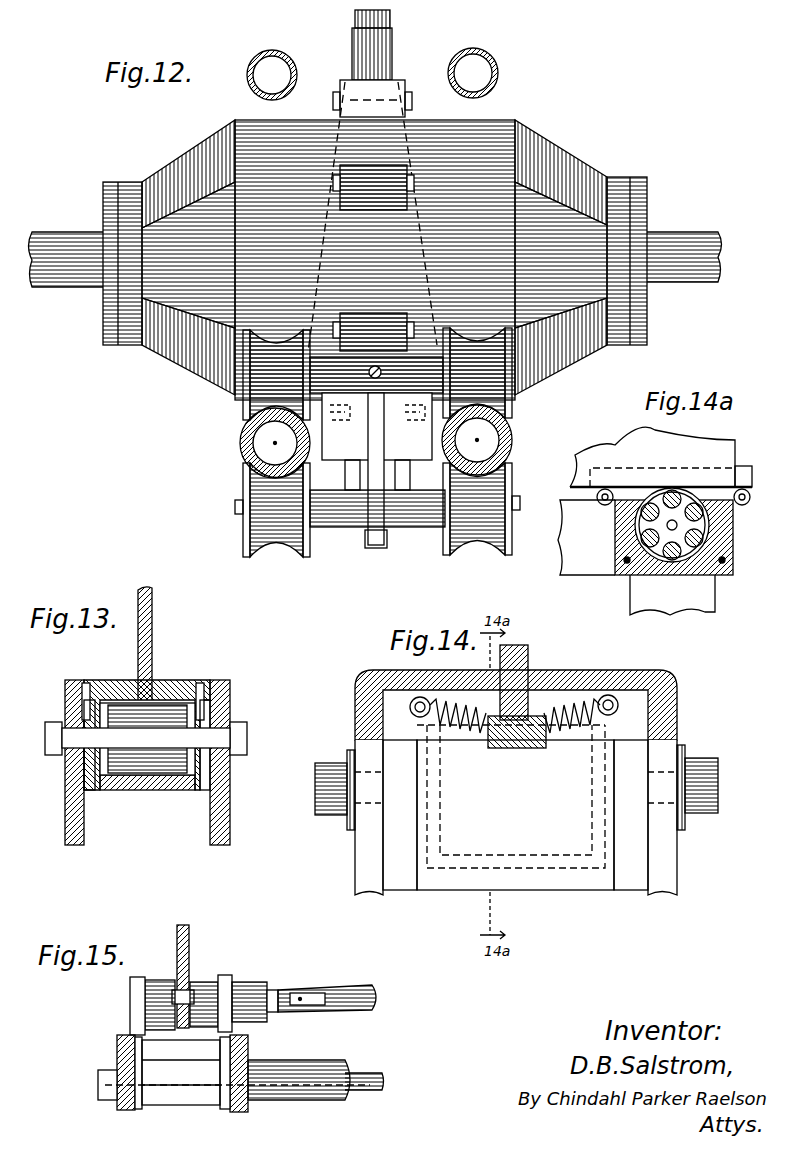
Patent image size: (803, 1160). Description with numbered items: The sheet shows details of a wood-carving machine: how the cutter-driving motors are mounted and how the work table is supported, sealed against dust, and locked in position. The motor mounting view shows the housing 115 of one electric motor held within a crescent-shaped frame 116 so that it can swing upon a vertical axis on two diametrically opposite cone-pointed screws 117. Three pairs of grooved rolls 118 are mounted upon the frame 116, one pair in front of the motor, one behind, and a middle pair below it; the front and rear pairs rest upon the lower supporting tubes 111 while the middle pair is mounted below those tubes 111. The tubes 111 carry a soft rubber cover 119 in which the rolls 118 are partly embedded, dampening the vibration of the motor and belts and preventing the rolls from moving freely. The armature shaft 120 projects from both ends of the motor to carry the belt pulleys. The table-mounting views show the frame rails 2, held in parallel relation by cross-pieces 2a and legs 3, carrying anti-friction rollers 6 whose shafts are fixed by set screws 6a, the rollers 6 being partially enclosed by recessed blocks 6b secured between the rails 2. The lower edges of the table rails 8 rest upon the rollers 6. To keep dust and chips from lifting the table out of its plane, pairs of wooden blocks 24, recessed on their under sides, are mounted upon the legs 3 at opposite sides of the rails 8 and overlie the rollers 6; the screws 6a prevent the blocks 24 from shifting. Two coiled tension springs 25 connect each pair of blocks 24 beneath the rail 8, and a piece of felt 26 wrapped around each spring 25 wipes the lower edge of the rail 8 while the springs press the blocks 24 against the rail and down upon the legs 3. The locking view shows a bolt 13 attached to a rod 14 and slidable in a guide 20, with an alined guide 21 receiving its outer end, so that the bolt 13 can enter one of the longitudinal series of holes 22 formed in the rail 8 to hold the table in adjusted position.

In FIG. 14A, the rails 2 is at (600, 572).
In FIG. 13, the rails 2 is at (92, 790).
In FIG. 14, the rails 2 is at (402, 878).
In FIG. 15, the rails 2 is at (128, 1110).
In FIG. 15, the cross-pieces 2a is at (325, 1068).
In FIG. 14A, the legs 3 is at (718, 600).
In FIG. 13, the legs 3 is at (66, 825).
In FIG. 14, the legs 3 is at (358, 893).
In FIG. 14A, the anti-friction rollers 6 is at (682, 560).
In FIG. 13, the anti-friction rollers 6 is at (140, 770).
In FIG. 14, the anti-friction rollers 6 is at (463, 872).
In FIG. 13, the set screws 6a is at (82, 690).
In FIG. 14A, the recessed blocks 6b is at (735, 555).
In FIG. 13, the recessed blocks 6b is at (172, 790).
In FIG. 14, the recessed blocks 6b is at (548, 875).
In FIG. 14A, the rails 8 is at (715, 445).
In FIG. 13, the rails 8 is at (152, 623).
In FIG. 14, the rails 8 is at (520, 650).
In FIG. 15, the rails 8 is at (189, 935).
In FIG. 15, the bolts 13 is at (173, 982).
In FIG. 15, the rod 14 is at (348, 985).
In FIG. 15, the guides 20 is at (255, 982).
In FIG. 15, the guides 21 is at (138, 978).
In FIG. 15, the holes 22 is at (192, 990).
In FIG. 14A, the wooden blocks 24 is at (752, 475).
In FIG. 13, the wooden blocks 24 is at (108, 680).
In FIG. 14, the wooden blocks 24 is at (370, 678).
In FIG. 14A, the coiled tension springs 25 is at (603, 506).
In FIG. 14, the coiled tension springs 25 is at (460, 730).
In FIG. 14, the felt 26 is at (518, 750).
In FIG. 12, the tubular member 111 is at (285, 58).
In FIG. 12, the motor housing 115 is at (505, 130).
In FIG. 12, the crescent-shaped frame 116 is at (412, 224).
In FIG. 12, the cone-pointed screws 117 is at (338, 185).
In FIG. 12, the grooved rolls 118 is at (243, 410).
In FIG. 12, the soft rubber cover 119 is at (243, 460).
In FIG. 12, the armature shaft 120 is at (56, 243).